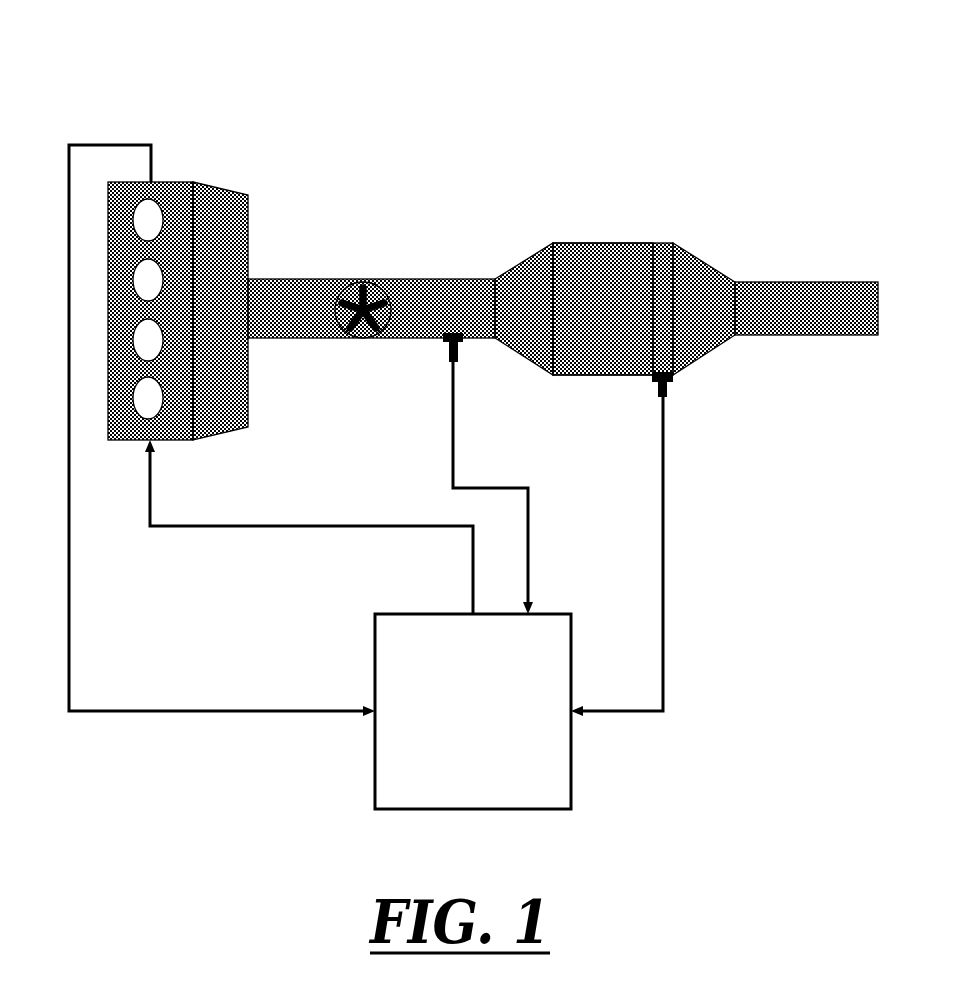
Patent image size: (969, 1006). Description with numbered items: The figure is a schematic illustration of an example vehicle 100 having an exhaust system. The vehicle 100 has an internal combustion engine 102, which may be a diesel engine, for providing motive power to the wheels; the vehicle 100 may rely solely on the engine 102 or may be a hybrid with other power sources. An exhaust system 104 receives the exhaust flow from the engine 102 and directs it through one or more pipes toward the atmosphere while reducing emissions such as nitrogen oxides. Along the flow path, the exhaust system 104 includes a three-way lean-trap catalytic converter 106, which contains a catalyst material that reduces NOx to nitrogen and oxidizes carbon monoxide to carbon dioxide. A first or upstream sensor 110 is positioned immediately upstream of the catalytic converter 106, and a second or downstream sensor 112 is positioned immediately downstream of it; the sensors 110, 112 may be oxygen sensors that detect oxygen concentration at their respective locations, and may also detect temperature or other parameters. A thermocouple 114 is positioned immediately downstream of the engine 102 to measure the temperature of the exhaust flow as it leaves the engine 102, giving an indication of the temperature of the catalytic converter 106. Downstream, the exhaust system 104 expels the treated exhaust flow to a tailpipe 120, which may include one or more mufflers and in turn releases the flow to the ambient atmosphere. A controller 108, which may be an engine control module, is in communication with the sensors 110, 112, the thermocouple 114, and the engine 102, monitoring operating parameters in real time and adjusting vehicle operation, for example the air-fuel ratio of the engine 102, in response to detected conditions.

The vehicle 100 is at (534, 84).
The internal combustion engine 102 is at (215, 203).
The exhaust system 104 is at (617, 186).
The three-way lean-trap catalytic converter 106 is at (627, 325).
The controller 108 is at (493, 727).
The upstream sensor 110 is at (463, 342).
The downstream sensor 112 is at (667, 387).
The thermocouple 114 is at (358, 283).
The tailpipe 120 is at (800, 293).